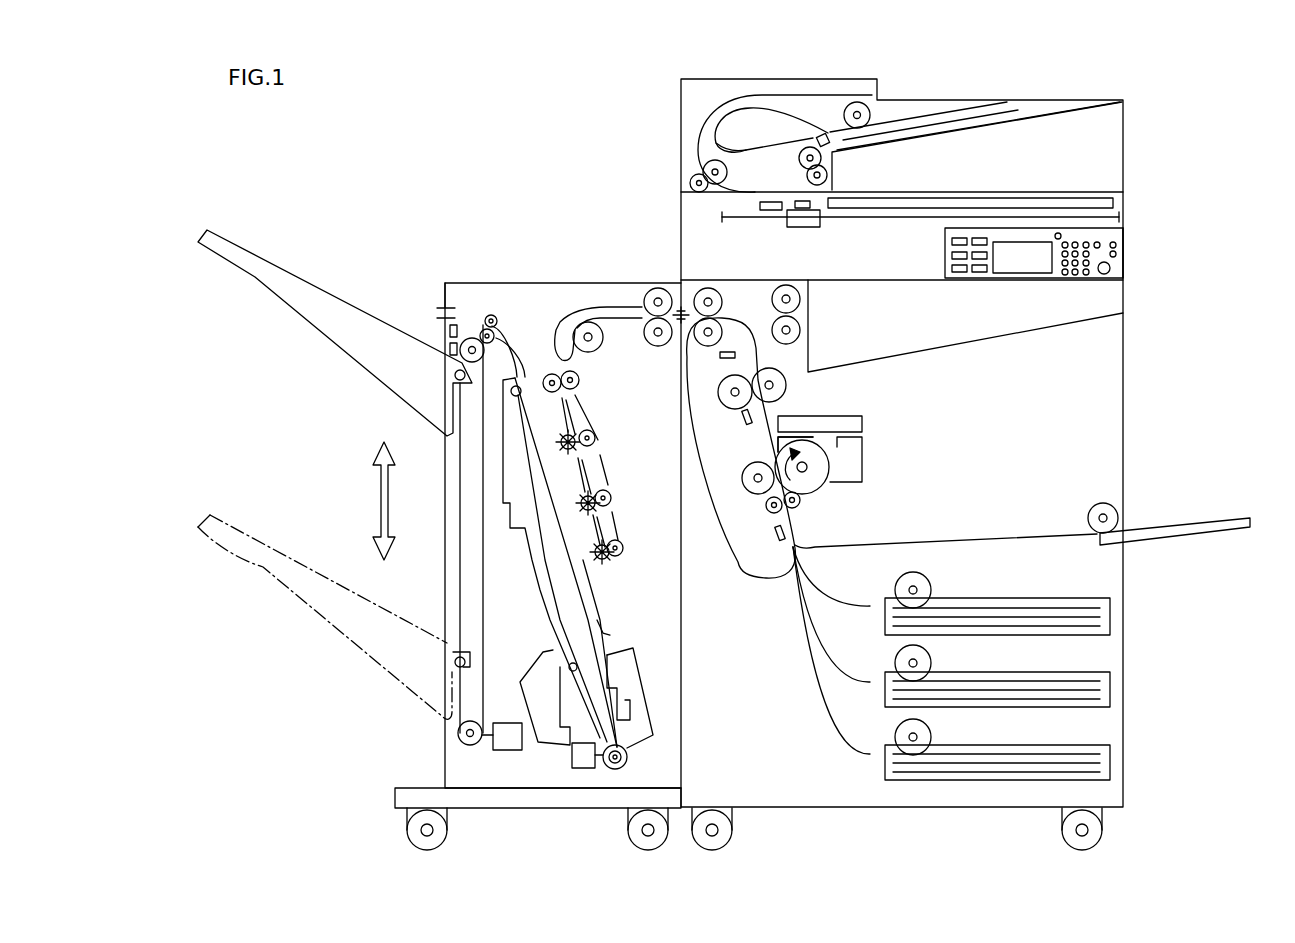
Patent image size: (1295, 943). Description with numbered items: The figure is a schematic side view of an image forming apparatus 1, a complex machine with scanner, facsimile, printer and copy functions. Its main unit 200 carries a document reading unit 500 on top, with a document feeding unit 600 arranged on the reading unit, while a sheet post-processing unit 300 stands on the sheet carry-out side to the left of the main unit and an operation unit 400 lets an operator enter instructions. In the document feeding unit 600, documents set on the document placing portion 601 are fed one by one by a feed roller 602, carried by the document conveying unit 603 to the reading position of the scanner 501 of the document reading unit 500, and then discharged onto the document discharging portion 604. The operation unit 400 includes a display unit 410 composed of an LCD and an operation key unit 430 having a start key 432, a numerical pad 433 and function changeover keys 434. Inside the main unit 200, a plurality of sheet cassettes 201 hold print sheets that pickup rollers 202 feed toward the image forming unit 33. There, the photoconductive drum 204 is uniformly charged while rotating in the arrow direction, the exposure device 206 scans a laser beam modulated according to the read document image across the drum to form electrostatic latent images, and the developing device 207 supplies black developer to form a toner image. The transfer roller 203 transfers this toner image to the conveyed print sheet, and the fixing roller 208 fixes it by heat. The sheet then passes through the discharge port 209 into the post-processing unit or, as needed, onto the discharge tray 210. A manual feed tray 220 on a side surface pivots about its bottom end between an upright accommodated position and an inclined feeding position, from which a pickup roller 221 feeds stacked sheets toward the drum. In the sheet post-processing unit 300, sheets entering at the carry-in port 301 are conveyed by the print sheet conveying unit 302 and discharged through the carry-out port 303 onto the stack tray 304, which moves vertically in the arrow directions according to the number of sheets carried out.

The image forming apparatus 1 is at (556, 90).
The image forming unit 33 is at (862, 402).
The main unit 200 is at (1100, 428).
The sheet cassette 201 is at (1110, 612).
The pickup roller 202 is at (931, 590).
The transfer roller 203 is at (757, 492).
The photoconductive drum 204 is at (813, 483).
The exposure device 206 is at (858, 424).
The developing device 207 is at (860, 446).
The fixing roller 208 is at (733, 402).
The discharge port 209 is at (707, 288).
The discharge tray 210 is at (995, 335).
The manual feed tray 220 is at (1250, 518).
The pickup roller 221 is at (1098, 505).
The sheet post-processing unit 300 is at (510, 272).
The carry-in port 301 is at (658, 289).
The print sheet conveying unit 302 is at (590, 307).
The carry-out port 303 is at (437, 310).
The stack tray 304 is at (368, 381).
The operation unit 400 is at (1137, 258).
The display unit 410 is at (1022, 258).
The operation key unit 430 is at (1130, 269).
The start key 432 is at (1103, 274).
The numerical pad 433 is at (1068, 273).
The function changeover keys 434 is at (947, 260).
The document reading unit 500 is at (1135, 202).
The scanner 501 is at (810, 228).
The document feeding unit 600 is at (950, 95).
The document placing portion 601 is at (1047, 105).
The feed roller 602 is at (870, 115).
The document conveying unit 603 is at (738, 148).
The document discharging portion 604 is at (933, 187).